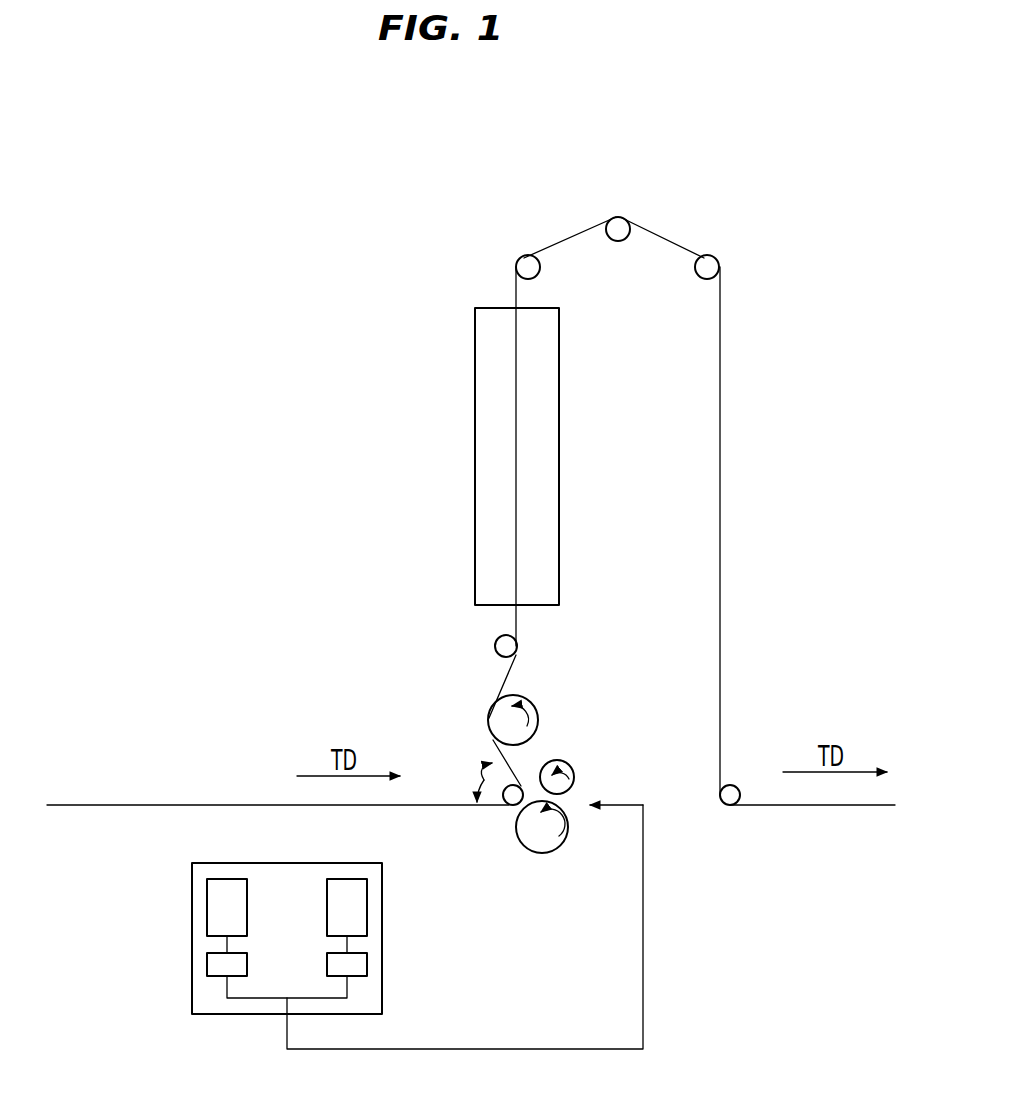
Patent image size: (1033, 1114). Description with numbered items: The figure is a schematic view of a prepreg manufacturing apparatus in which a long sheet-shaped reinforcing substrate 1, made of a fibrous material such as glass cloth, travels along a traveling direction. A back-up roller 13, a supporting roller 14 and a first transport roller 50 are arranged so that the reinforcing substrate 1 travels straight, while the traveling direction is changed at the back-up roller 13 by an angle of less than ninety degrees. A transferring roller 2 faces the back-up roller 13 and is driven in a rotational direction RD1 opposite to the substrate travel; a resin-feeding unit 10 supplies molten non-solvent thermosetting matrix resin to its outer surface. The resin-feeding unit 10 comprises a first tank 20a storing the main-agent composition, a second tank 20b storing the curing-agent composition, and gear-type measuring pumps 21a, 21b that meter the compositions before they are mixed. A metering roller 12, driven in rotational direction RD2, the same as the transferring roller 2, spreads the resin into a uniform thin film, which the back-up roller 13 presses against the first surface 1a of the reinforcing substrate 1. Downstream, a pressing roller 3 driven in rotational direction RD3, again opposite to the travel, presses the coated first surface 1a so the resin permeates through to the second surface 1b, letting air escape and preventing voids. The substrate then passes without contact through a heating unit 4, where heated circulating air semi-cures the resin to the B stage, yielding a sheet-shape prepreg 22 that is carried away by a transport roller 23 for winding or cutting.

The reinforcing substrate 1 is at (226, 800).
The first surface 1a is at (512, 771).
The second surface 1b is at (500, 681).
The transferring roller 2 is at (548, 853).
The pressing roller 3 is at (540, 716).
The heating unit 4 is at (475, 450).
The resin-feeding unit 10 is at (286, 982).
The metering roller 12 is at (572, 768).
The back-up roller 13 is at (508, 808).
The supporting roller 14 is at (495, 645).
The first tank 20a is at (217, 907).
The second tank 20b is at (357, 907).
The measuring pump 21a is at (207, 963).
The measuring pump 21b is at (367, 963).
The sheet-shape prepreg 22 is at (722, 372).
The transport roller 23 is at (696, 268).
The first transport roller 50 is at (516, 262).
The rotational direction of transferring roller RD1 is at (568, 822).
The rotational direction of metering roller RD2 is at (570, 779).
The rotational direction of pressing roller RD3 is at (526, 701).